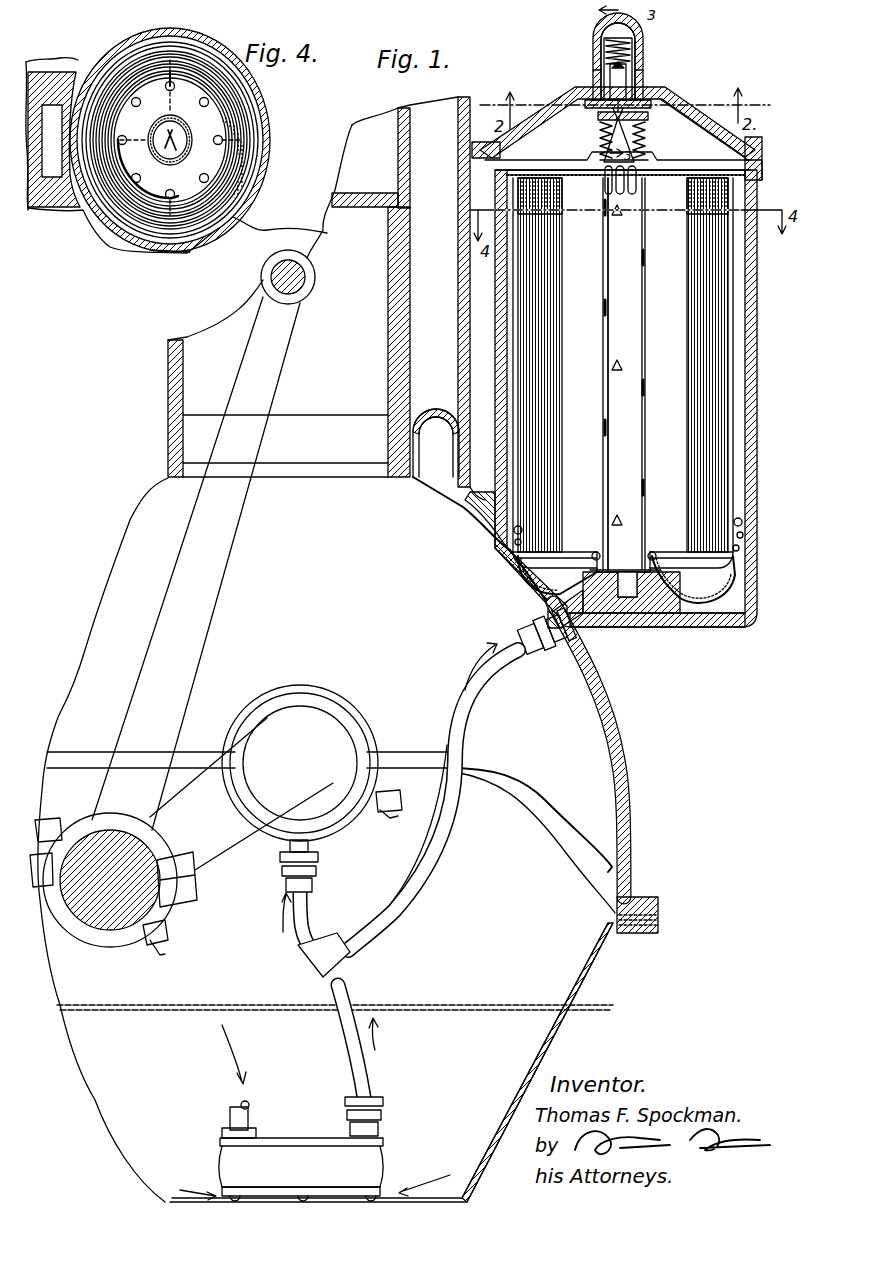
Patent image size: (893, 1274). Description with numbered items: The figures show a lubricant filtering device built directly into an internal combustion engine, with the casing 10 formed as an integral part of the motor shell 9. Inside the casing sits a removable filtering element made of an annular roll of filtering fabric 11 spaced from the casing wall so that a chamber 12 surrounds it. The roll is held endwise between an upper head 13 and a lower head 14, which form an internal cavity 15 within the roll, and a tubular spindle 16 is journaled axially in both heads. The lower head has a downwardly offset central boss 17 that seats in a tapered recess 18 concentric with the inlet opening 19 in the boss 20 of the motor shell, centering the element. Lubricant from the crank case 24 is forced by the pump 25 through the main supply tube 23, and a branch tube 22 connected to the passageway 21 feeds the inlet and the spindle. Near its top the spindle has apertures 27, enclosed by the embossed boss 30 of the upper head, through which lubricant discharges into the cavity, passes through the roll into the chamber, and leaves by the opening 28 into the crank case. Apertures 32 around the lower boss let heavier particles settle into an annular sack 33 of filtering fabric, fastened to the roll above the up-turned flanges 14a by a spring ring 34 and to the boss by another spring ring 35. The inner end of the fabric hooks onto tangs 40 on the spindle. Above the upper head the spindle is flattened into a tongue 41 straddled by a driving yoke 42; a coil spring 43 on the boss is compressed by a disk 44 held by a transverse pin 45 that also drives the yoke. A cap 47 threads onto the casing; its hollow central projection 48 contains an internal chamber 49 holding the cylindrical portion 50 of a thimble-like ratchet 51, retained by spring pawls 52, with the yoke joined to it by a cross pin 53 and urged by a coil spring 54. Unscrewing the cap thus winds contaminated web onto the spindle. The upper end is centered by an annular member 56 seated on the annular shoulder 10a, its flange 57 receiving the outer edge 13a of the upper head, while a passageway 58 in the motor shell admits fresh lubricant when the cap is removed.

In FIG. 4, the motor shell 9 is at (163, 253).
In FIG. 1, the motor shell 9 is at (344, 649).
In FIG. 4, the casing 10 is at (253, 197).
In FIG. 1, the casing 10 is at (757, 420).
In FIG. 1, the annular shoulder 10a is at (758, 158).
In FIG. 4, the filtering fabric 11 is at (233, 108).
In FIG. 1, the filtering fabric 11 is at (718, 330).
In FIG. 4, the chamber 12 is at (257, 158).
In FIG. 1, the chamber 12 is at (740, 360).
In FIG. 1, the upper head 13 is at (672, 160).
In FIG. 1, the outer edge of upper head 13a is at (752, 150).
In FIG. 4, the lower head 14 is at (178, 88).
In FIG. 1, the lower head 14 is at (565, 540).
In FIG. 1, the up-turned flanges 14a is at (742, 540).
In FIG. 1, the internal cavity 15 is at (638, 374).
In FIG. 4, the tubular spindle 16 is at (170, 140).
In FIG. 1, the tubular spindle 16 is at (643, 300).
In FIG. 1, the central boss 17 is at (600, 555).
In FIG. 1, the tapered recess 18 is at (673, 616).
In FIG. 1, the inlet opening 19 is at (640, 598).
In FIG. 1, the boss 20 is at (630, 605).
In FIG. 1, the passageway 21 is at (590, 627).
In FIG. 1, the branch tube 22 is at (460, 795).
In FIG. 1, the main supply tube 23 is at (345, 985).
In FIG. 1, the crank case 24 is at (548, 1060).
In FIG. 1, the pump 25 is at (272, 1157).
In FIG. 1, the apertures 27 is at (640, 178).
In FIG. 1, the opening 28 is at (510, 548).
In FIG. 1, the boss of upper head 30 is at (645, 164).
In FIG. 4, the apertures 32 is at (166, 169).
In FIG. 1, the apertures 32 is at (665, 550).
In FIG. 1, the annular sack 33 is at (530, 584).
In FIG. 1, the spring ring 34 is at (742, 522).
In FIG. 1, the spring ring 35 is at (658, 555).
In FIG. 4, the tangs 40 is at (179, 137).
In FIG. 1, the tangs 40 is at (611, 220).
In FIG. 1, the tongue 41 is at (626, 70).
In FIG. 1, the driving yoke 42 is at (630, 60).
In FIG. 1, the coil spring 43 is at (645, 126).
In FIG. 1, the disk 44 is at (600, 118).
In FIG. 1, the transverse pin 45 is at (625, 110).
In FIG. 1, the cap 47 is at (668, 110).
In FIG. 1, the hollow central projection 48 is at (605, 52).
In FIG. 1, the internal chamber 49 is at (638, 32).
In FIG. 1, the cylindrical portion 50 is at (595, 70).
In FIG. 1, the ratchet 51 is at (595, 100).
In FIG. 1, the spring pawls 52 is at (632, 100).
In FIG. 1, the cross pin 53 is at (632, 46).
In FIG. 1, the coil spring 54 is at (600, 38).
In FIG. 1, the annular member 56 is at (805, 104).
In FIG. 1, the flange 57 is at (756, 185).
In FIG. 4, the passageway 58 is at (55, 167).
In FIG. 1, the passageway 58 is at (483, 320).